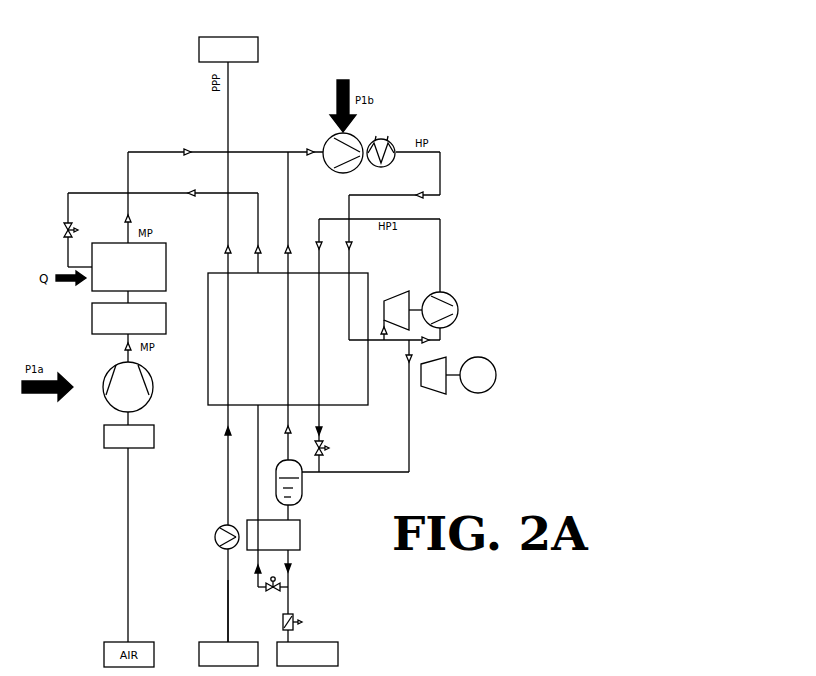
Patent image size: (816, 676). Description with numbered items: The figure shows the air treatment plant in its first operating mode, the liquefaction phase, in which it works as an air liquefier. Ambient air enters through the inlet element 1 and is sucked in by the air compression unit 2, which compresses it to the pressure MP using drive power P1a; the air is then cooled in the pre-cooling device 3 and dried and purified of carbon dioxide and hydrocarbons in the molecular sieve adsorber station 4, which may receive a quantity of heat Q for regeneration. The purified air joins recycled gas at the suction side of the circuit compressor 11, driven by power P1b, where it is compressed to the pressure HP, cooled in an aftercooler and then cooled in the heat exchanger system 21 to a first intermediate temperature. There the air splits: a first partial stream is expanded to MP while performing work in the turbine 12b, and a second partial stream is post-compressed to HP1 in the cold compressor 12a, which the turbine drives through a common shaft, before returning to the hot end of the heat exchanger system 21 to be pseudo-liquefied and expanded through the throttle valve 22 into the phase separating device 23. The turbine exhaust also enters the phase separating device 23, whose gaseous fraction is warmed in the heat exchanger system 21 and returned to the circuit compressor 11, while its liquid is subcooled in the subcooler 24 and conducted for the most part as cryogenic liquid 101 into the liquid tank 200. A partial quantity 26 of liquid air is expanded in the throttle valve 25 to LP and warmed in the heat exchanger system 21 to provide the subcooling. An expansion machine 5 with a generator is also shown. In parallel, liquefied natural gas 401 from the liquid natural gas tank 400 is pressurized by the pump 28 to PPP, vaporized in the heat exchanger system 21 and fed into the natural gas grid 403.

The air filter 1 is at (139, 436).
The air compression unit 2 is at (137, 387).
The pre-cooling device 3 is at (138, 320).
The molecular sieve adsorber station 4 is at (138, 267).
The expansion turbine with generator 5 is at (458, 386).
The circuit compressor 11 is at (359, 161).
The cold compressor 12a is at (458, 310).
The turbine 12b is at (398, 301).
The heat exchanger system 21 is at (288, 339).
The expansion valve 22 is at (338, 449).
The phase separating device 23 is at (301, 487).
The subcooler 24 is at (284, 528).
The throttle valve 25 is at (273, 595).
The partial quantity of liquid air 26 is at (257, 588).
The pump 28 is at (213, 537).
The cryogenic liquid 101 is at (290, 597).
The liquefied natural gas 401 is at (227, 608).
The liquid tank 200 is at (307, 654).
The liquid natural gas tank 400 is at (228, 654).
The natural gas grid 403 is at (228, 49).